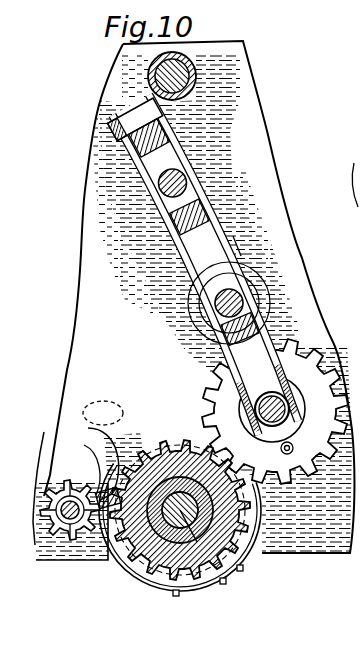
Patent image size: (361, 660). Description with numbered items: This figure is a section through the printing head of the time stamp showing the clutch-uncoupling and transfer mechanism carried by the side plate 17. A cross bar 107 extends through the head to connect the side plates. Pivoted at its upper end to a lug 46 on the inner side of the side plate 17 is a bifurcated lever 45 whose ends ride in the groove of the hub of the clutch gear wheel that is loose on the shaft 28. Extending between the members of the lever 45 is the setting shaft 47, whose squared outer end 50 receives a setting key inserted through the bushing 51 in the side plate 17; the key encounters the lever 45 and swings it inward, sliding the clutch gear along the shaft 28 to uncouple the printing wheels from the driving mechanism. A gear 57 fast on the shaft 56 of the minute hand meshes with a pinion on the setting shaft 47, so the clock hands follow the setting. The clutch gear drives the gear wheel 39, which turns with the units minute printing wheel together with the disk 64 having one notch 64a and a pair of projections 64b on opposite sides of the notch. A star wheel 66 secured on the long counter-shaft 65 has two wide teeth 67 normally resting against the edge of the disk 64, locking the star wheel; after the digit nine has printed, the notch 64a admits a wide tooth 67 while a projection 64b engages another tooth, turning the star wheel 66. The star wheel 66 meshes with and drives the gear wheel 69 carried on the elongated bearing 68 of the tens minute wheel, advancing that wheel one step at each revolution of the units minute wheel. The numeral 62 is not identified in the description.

The cross bar 107 is at (197, 78).
The lug 46 is at (186, 130).
The shaft 56 is at (187, 176).
The side plate 17 is at (195, 300).
The bifurcated lever 45 is at (237, 245).
The setting shaft 47 is at (188, 298).
The gear 57 is at (342, 177).
The bushing 51 is at (198, 301).
The outer end of the setting shaft 50 is at (196, 314).
The shaft 28 is at (304, 411).
The star wheel 66 is at (30, 482).
The projections 64b is at (103, 414).
The notch 64a is at (100, 468).
The counter-shaft 65 is at (60, 522).
The wide teeth 67 is at (63, 518).
The gear wheel 39 is at (146, 547).
The disk 64 is at (143, 574).
The elongated bearing 68 is at (180, 600).
The gear wheel 69 is at (228, 586).
The lug 62 is at (244, 568).